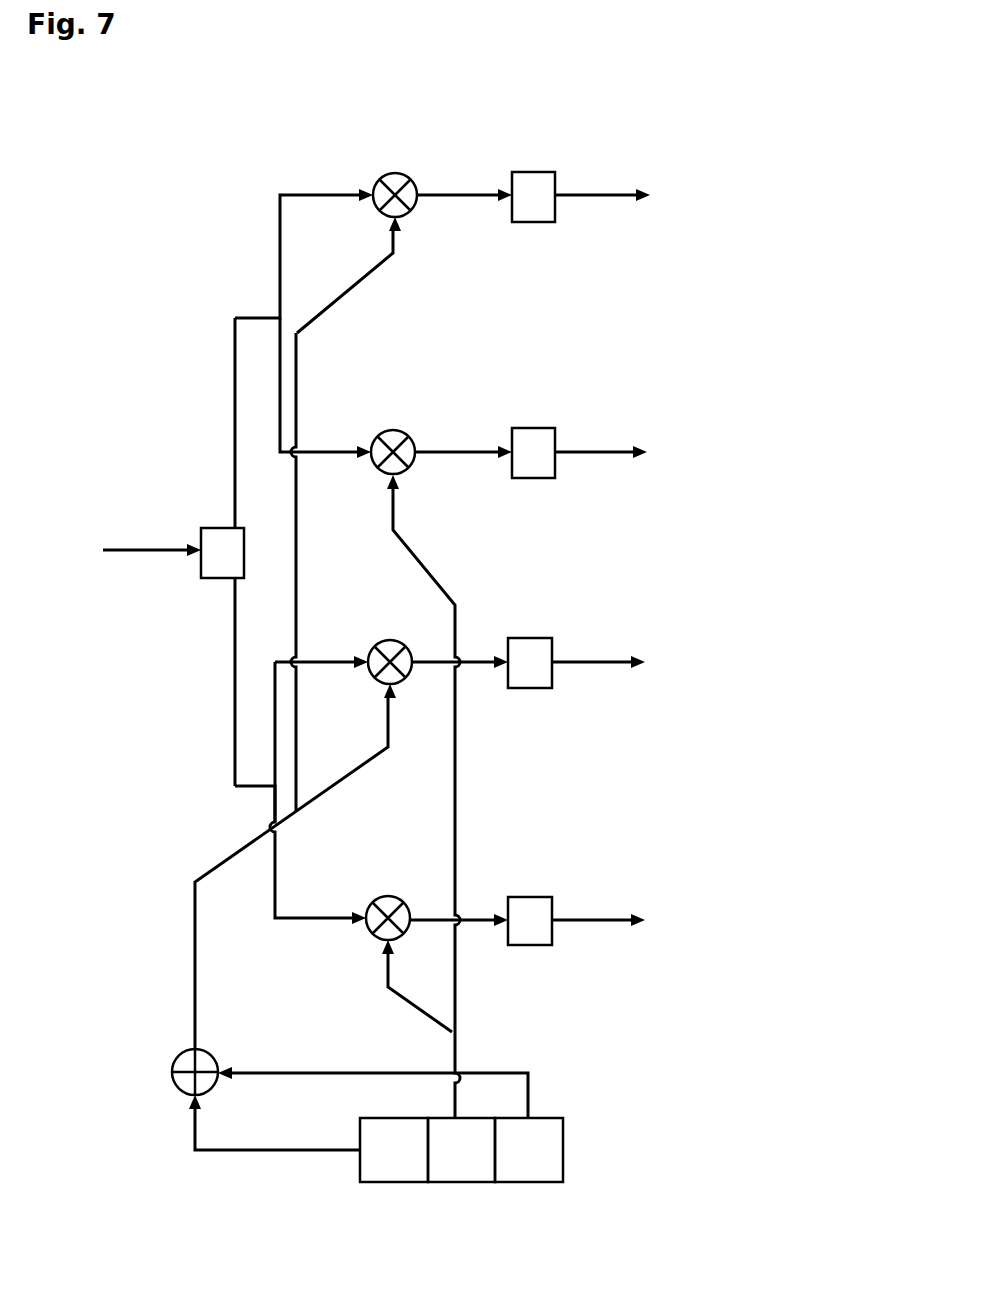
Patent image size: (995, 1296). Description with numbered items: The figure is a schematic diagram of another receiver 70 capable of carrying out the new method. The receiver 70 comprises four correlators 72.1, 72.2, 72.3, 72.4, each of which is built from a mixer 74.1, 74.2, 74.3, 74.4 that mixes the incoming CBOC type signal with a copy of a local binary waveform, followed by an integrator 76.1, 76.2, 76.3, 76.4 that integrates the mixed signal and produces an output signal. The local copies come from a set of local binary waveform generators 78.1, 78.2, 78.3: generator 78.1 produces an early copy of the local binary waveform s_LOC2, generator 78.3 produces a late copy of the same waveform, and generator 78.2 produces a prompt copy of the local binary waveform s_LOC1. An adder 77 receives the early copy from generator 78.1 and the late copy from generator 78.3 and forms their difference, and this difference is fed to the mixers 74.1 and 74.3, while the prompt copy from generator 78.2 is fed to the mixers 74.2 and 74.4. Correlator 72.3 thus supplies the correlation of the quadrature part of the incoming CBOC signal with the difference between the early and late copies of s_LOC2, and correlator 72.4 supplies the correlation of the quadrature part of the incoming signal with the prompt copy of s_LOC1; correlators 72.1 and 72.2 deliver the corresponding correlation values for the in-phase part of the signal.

The receiver 70 is at (220, 155).
The correlator 72.1 is at (600, 168).
The correlator 72.2 is at (650, 428).
The correlator 72.3 is at (598, 635).
The correlator 72.4 is at (600, 895).
The mixer 74.1 is at (390, 173).
The mixer 74.2 is at (407, 470).
The mixer 74.3 is at (385, 637).
The mixer 74.4 is at (383, 900).
The integrator 76.1 is at (545, 222).
The integrator 76.2 is at (535, 478).
The integrator 76.3 is at (535, 688).
The integrator 76.4 is at (535, 945).
The adder 77 is at (205, 1050).
The local binary waveform generator 78.1 is at (360, 1137).
The local binary waveform generator 78.2 is at (437, 1118).
The local binary waveform generator 78.3 is at (563, 1135).